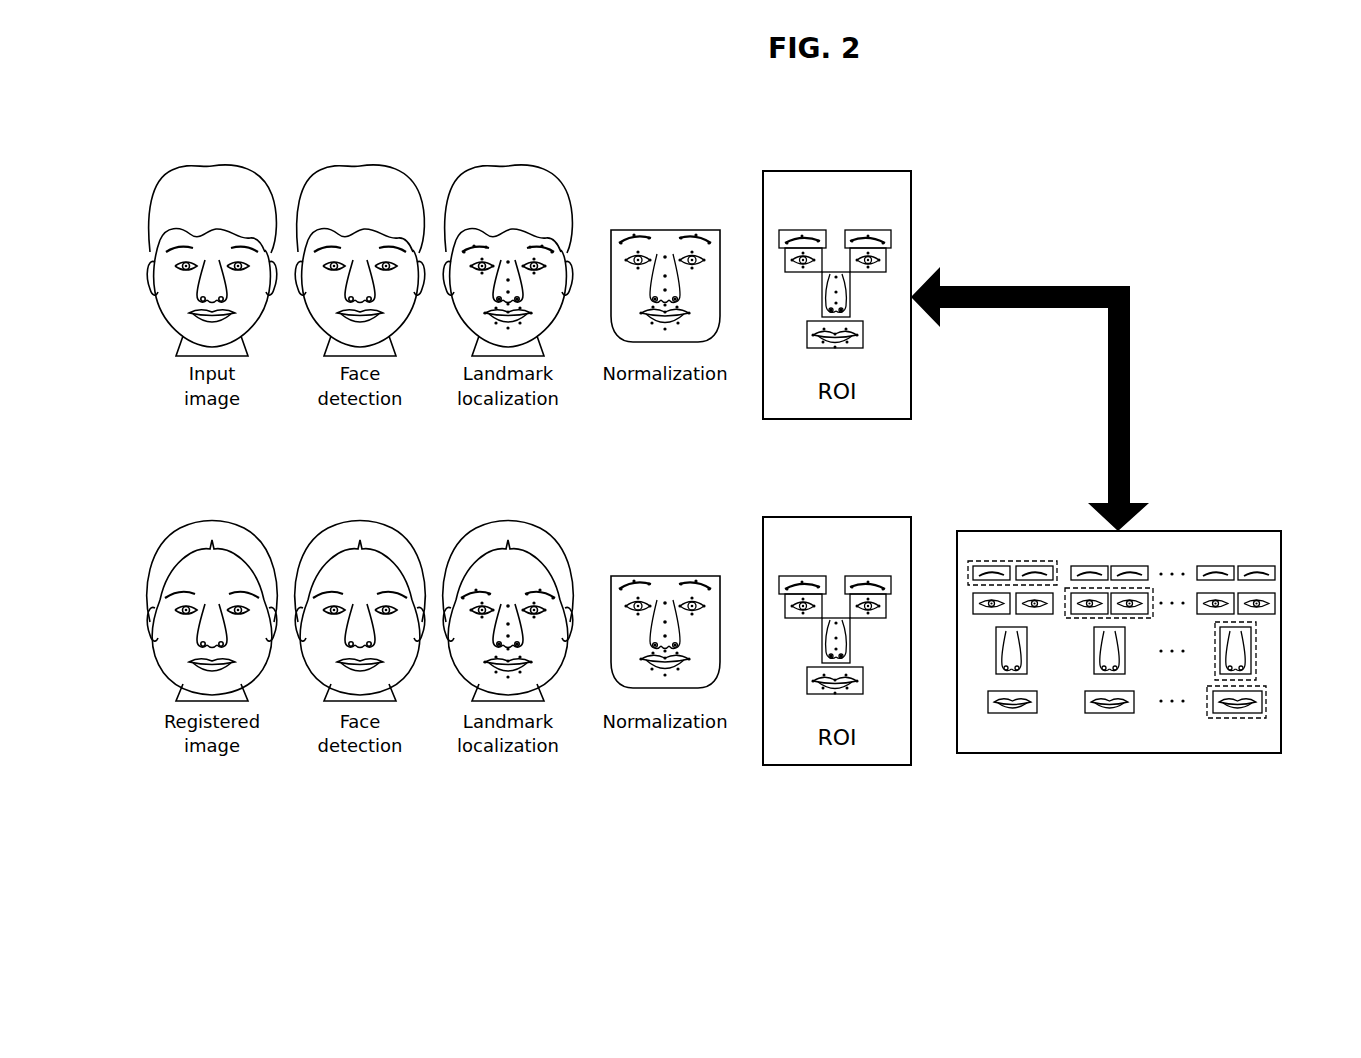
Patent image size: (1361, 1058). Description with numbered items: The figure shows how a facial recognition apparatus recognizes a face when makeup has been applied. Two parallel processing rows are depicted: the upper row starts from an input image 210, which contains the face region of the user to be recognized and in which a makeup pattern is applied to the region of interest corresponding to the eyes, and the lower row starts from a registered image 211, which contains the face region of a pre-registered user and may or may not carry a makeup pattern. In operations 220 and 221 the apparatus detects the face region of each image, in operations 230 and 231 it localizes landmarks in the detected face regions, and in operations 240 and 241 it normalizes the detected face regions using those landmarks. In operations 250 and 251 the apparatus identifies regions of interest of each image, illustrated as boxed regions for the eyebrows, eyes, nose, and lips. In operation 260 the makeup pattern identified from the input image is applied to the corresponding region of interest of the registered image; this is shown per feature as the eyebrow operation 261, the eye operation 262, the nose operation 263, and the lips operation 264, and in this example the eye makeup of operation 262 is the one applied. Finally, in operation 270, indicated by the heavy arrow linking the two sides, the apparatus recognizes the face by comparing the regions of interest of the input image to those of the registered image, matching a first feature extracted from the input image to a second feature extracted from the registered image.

The input image 210 is at (213, 165).
The face region detection operation 220 is at (361, 165).
The landmark localization operation 230 is at (509, 165).
The normalization operation 240 is at (665, 230).
The ROI identification operation 250 is at (838, 171).
The registered image 211 is at (213, 523).
The face region detection operation 221 is at (361, 523).
The landmark localization operation 231 is at (509, 523).
The normalization operation 241 is at (665, 577).
The ROI identification operation 251 is at (838, 517).
The makeup pattern application operation 260 is at (1152, 639).
The eyebrow makeup pattern application operation 261 is at (1012, 561).
The eye makeup pattern application operation 262 is at (1085, 620).
The nose makeup pattern application operation 263 is at (1256, 648).
The lips makeup pattern application operation 264 is at (1235, 720).
The face recognition operation 270 is at (1035, 286).